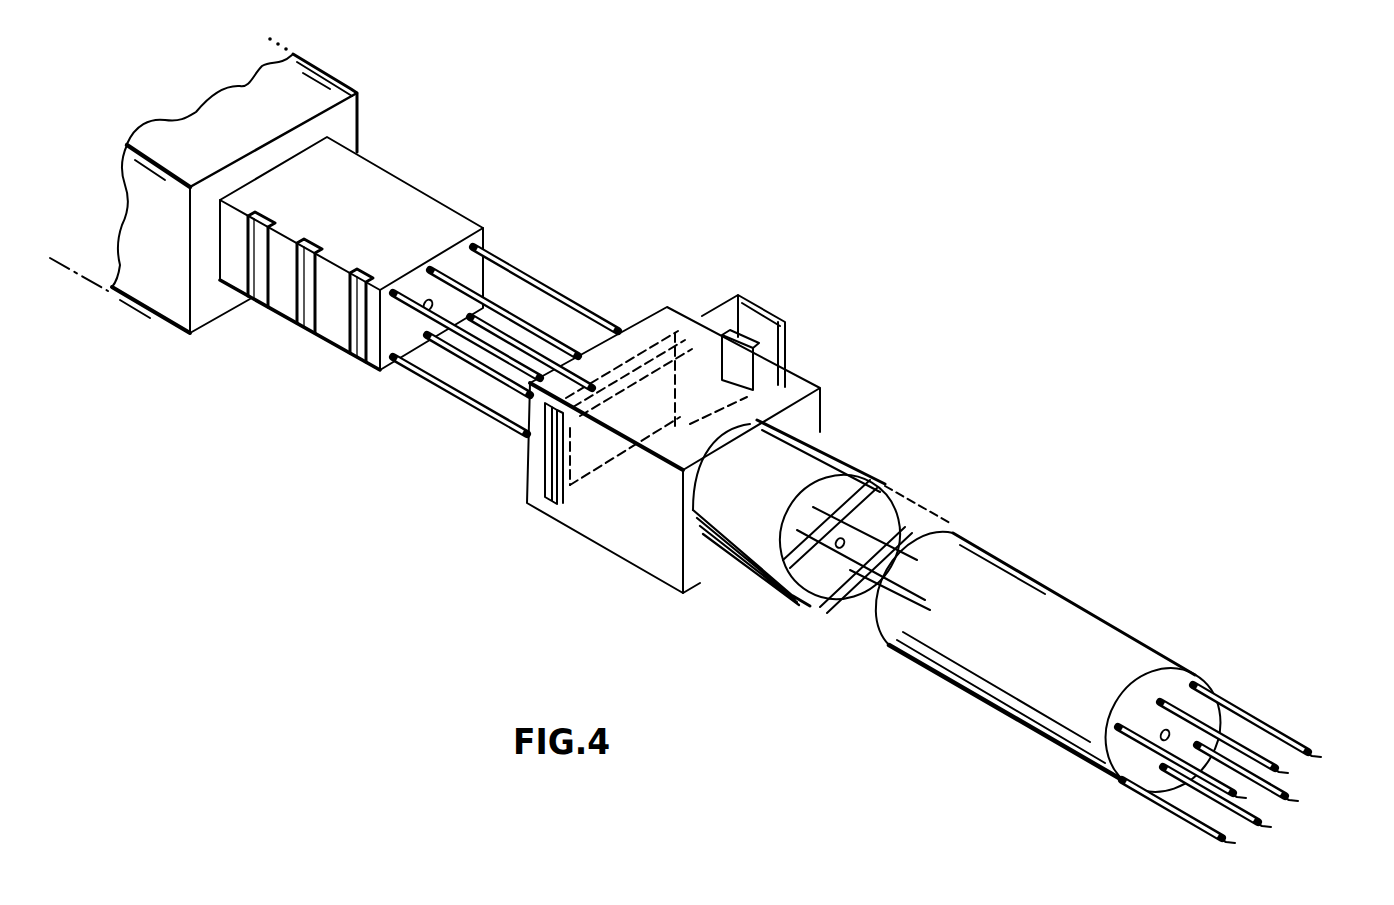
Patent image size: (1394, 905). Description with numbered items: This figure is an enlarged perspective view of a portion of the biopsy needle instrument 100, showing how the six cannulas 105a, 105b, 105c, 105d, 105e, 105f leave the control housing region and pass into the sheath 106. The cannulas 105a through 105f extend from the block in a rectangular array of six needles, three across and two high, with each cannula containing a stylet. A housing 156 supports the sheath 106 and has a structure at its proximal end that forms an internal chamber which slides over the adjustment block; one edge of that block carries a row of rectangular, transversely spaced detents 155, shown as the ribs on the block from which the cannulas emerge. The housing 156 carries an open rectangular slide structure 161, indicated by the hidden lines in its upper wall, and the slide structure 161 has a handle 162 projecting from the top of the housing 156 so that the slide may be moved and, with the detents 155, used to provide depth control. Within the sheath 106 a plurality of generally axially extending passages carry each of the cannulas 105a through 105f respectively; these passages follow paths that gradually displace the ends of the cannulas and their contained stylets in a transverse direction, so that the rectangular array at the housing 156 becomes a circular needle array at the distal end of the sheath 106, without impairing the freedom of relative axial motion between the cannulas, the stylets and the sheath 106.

The biopsy needle instrument 100 is at (377, 46).
The detents 155 is at (447, 203).
The housing 156 is at (800, 381).
The slide structure 161 is at (660, 343).
The handle 162 is at (788, 347).
The sheath 106 is at (840, 473).
The cannula 105a is at (510, 263).
The cannula 105b is at (450, 277).
The cannula 105c is at (400, 290).
The cannula 105d is at (423, 376).
The cannula 105e is at (487, 370).
The cannula 105f is at (548, 350).